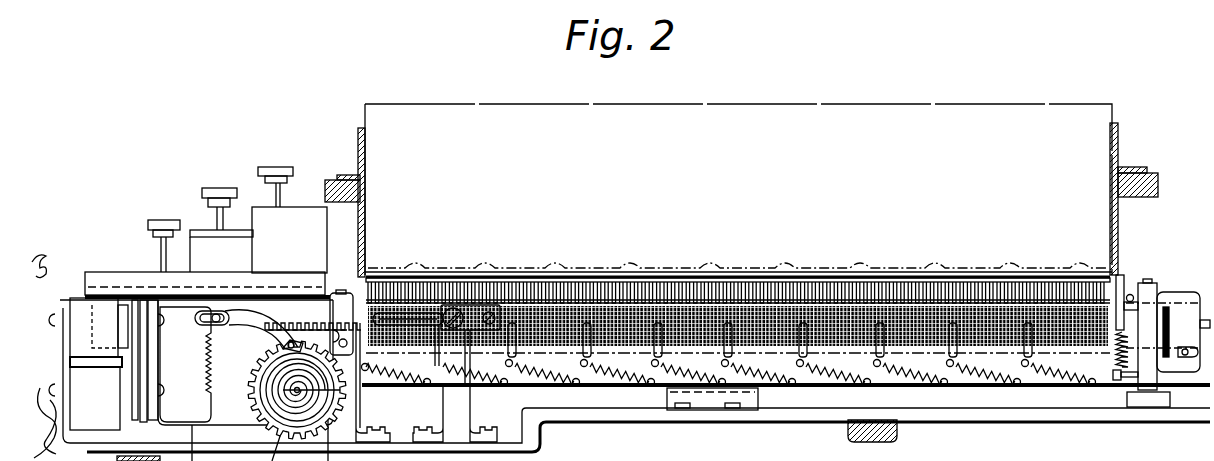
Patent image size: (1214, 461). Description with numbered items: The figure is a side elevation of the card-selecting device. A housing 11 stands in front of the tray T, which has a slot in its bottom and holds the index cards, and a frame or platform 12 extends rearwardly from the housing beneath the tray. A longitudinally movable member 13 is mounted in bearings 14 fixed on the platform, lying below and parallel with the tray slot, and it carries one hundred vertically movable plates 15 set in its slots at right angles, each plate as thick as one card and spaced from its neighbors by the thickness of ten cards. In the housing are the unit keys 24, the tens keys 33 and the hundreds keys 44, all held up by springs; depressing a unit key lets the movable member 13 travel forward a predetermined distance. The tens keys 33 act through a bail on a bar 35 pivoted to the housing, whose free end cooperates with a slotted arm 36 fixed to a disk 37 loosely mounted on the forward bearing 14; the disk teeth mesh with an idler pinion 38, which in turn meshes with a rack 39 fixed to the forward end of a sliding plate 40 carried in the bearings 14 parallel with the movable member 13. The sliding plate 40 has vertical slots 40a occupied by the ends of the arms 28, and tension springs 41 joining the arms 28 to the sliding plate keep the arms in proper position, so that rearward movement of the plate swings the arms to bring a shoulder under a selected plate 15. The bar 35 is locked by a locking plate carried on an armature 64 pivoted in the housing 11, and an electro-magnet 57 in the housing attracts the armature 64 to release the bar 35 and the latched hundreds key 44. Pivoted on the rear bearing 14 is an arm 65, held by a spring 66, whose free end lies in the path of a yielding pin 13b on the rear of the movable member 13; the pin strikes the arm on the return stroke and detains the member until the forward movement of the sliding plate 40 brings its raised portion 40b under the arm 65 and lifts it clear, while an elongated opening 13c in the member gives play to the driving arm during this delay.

The housing 11 is at (133, 283).
The frame or platform 12 is at (932, 420).
The longitudinally movable member 13 is at (655, 320).
The yielding pin 13b is at (1133, 290).
The elongated opening 13c is at (1178, 358).
The bearings 14 is at (357, 408).
The vertically movable plates 15 is at (549, 285).
The unit keys 24 is at (284, 167).
The arms 28 is at (440, 365).
The tens keys 33 is at (215, 188).
The bar 35 is at (185, 364).
The slotted arm 36 is at (251, 331).
The disk 37 is at (257, 397).
The idler pinion 38 is at (270, 348).
The rack 39 is at (313, 322).
The sliding plate 40 is at (767, 330).
The vertical slots 40a is at (893, 333).
The raised portion 40b is at (1108, 307).
The tension springs 41 is at (392, 374).
The hundreds keys 44 is at (160, 220).
The electro-magnet 57 is at (96, 393).
The armature 64 is at (140, 320).
The arm 65 is at (1122, 283).
The spring 66 is at (1113, 374).
The tray T is at (1110, 208).